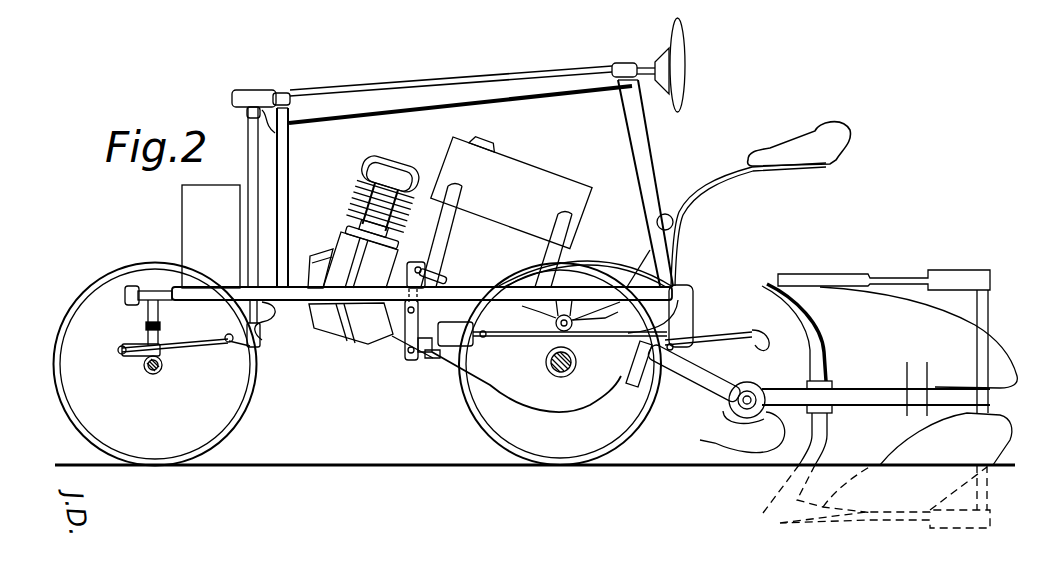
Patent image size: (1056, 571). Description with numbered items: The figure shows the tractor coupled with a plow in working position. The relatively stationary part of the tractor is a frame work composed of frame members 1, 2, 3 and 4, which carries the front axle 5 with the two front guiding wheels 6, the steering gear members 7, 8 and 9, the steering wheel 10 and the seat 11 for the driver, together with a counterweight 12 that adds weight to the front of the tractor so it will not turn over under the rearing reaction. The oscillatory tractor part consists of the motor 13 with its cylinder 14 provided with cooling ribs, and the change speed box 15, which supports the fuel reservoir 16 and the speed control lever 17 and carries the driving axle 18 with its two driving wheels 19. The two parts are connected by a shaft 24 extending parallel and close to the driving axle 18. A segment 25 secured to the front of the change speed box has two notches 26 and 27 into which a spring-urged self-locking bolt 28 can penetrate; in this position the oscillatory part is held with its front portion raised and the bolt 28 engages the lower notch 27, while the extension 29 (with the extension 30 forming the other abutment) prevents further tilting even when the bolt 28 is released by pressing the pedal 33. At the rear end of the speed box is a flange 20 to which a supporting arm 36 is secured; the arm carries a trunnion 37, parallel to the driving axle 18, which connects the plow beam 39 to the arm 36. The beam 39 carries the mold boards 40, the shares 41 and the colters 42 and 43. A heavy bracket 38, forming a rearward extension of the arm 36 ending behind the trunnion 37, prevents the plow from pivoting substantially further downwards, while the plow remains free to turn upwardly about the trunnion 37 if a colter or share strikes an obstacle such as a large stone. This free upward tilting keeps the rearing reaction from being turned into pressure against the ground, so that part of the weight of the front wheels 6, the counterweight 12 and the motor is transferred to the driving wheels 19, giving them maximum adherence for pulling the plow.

The frame member 1 is at (283, 181).
The frame member 2 is at (438, 105).
The frame member 3 is at (638, 157).
The frame member 4 is at (485, 290).
The front axle 5 is at (148, 318).
The front guiding wheels 6 is at (231, 433).
The steering gear member 7 is at (230, 341).
The steering gear member 8 is at (250, 111).
The steering gear member 9 is at (436, 91).
The steering wheel 10 is at (683, 80).
The seat 11 is at (832, 138).
The counterweight 12 is at (198, 232).
The motor 13 is at (369, 292).
The cylinder 14 is at (382, 172).
The change speed box 15 is at (490, 370).
The fuel reservoir 16 is at (550, 187).
The speed control lever 17 is at (645, 260).
The driving axle 18 is at (567, 365).
The driving wheels 19 is at (625, 440).
The flange 20 is at (630, 387).
The shaft 24 is at (555, 325).
The segment 25 is at (407, 328).
The notch 26 is at (410, 276).
The notch 27 is at (416, 360).
The self-locking bolt 28 is at (438, 334).
The extension 29 is at (435, 358).
The extension 30 is at (443, 277).
The pedal 33 is at (757, 340).
The supporting arm 36 is at (683, 385).
The trunnion 37 is at (753, 395).
The heavy bracket 38 is at (718, 433).
The plow beam 39 is at (868, 402).
The mold boards 40 is at (962, 338).
The shares 41 is at (843, 282).
The colter 42 is at (812, 342).
The colter 43 is at (822, 443).